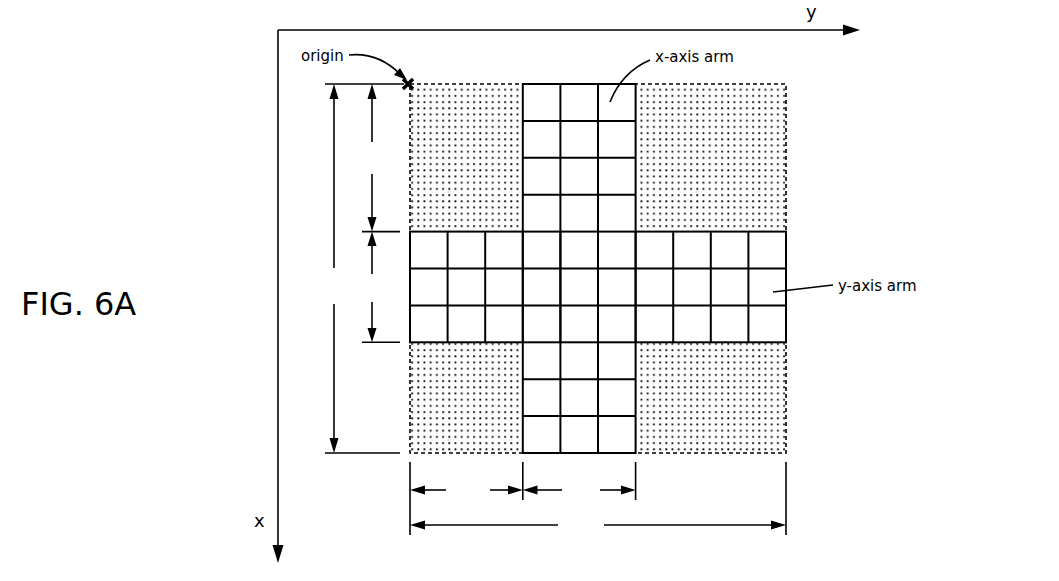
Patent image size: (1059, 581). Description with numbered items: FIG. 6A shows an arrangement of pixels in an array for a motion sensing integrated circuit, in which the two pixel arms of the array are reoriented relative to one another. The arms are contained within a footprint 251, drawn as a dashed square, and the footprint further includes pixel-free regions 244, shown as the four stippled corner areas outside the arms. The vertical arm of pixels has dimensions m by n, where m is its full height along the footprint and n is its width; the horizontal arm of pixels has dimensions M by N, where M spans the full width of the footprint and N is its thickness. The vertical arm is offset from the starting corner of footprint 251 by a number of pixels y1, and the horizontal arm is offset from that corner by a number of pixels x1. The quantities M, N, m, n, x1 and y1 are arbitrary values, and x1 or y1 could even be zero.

The pixel-free region 244 is at (475, 100).
The footprint 251 is at (788, 107).
The x-axis arm dimension m is at (334, 268).
The y-axis arm dimension M is at (598, 525).
The y-axis arm offset x1 is at (372, 158).
The x-axis arm offset y1 is at (466, 490).
The y-axis arm dimension N is at (372, 287).
The x-axis arm dimension n is at (579, 489).